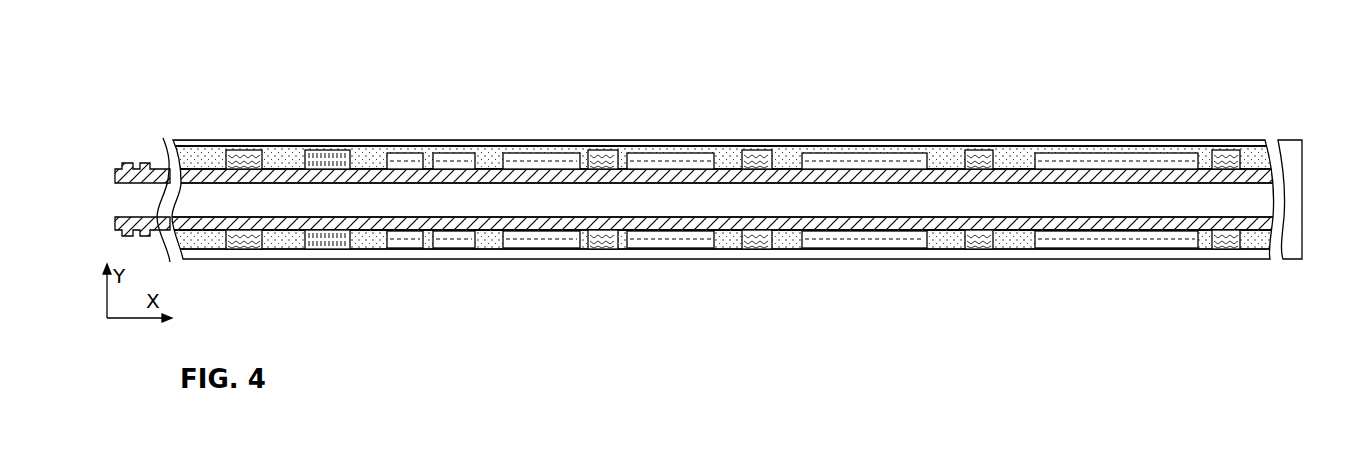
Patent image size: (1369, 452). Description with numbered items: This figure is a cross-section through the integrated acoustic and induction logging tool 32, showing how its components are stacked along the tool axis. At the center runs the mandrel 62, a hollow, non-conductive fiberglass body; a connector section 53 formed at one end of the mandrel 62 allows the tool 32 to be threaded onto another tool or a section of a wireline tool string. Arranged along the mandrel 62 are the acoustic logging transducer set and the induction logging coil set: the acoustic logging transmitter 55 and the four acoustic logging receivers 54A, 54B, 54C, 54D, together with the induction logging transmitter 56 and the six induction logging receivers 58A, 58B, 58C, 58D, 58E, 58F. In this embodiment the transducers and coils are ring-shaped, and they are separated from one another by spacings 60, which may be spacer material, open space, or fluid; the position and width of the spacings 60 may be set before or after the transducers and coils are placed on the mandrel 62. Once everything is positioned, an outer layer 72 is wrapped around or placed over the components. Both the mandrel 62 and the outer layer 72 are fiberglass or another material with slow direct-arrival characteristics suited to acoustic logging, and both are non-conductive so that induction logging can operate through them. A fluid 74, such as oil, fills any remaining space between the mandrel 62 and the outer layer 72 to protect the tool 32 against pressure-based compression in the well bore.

The integrated acoustic and induction logging tool 32 is at (115, 76).
The connector section 53 is at (115, 135).
The outer layer 72 is at (233, 143).
The fluid 74 is at (197, 160).
The mandrel 62 is at (408, 183).
The acoustic logging transmitter 55 is at (243, 249).
The induction logging transmitter 56 is at (327, 249).
The induction logging receiver 58A is at (405, 249).
The induction logging receiver 58B is at (457, 249).
The induction logging receiver 58C is at (537, 249).
The induction logging receiver 58D is at (672, 249).
The induction logging receiver 58E is at (860, 249).
The induction logging receiver 58F is at (1112, 249).
The acoustic logging receiver 54A is at (601, 249).
The acoustic logging receiver 54B is at (757, 249).
The acoustic logging receiver 54C is at (979, 249).
The acoustic logging receiver 54D is at (1222, 249).
The spacings 60 is at (283, 249).